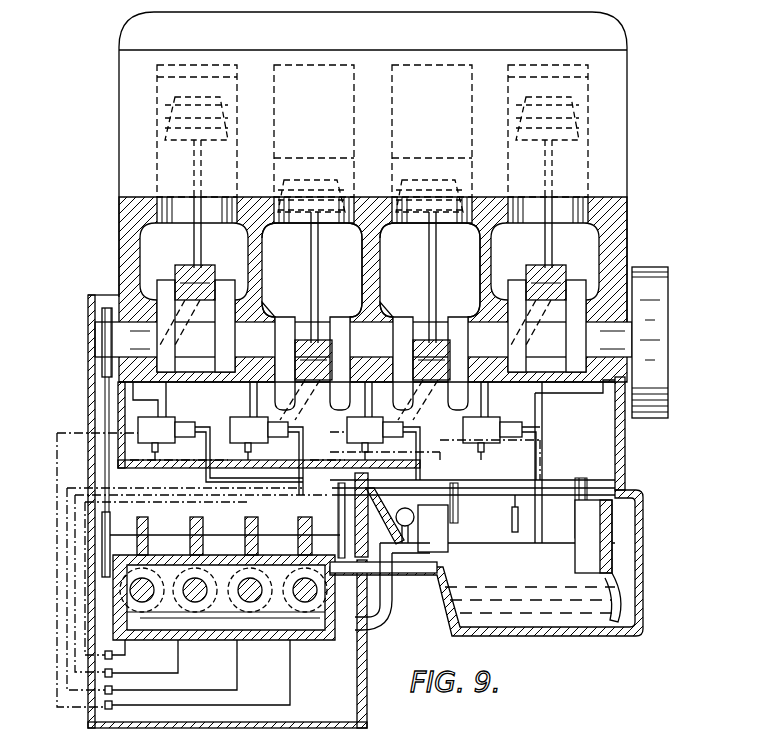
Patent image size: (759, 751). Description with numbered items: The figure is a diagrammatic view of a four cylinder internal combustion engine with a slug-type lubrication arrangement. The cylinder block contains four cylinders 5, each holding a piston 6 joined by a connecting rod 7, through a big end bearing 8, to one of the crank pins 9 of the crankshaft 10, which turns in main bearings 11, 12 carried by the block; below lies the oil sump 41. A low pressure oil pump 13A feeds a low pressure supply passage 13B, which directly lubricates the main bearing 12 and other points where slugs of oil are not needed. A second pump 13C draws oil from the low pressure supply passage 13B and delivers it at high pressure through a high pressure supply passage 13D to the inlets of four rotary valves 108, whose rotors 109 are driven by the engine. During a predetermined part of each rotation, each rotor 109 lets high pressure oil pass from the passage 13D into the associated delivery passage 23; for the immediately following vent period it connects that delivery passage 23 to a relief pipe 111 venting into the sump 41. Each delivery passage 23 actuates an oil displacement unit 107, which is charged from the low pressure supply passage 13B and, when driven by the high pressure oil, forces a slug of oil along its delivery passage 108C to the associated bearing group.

The cylinders 5 is at (274, 97).
The piston 6 is at (157, 97).
The connecting rod 7 is at (202, 248).
The big end bearing 8 is at (190, 278).
The crank pins 9 is at (220, 292).
The crankshaft 10 is at (512, 347).
The main bearing 11 is at (371, 270).
The main bearing 12 is at (601, 320).
The low pressure oil pump 13A is at (617, 528).
The low pressure supply passage 13B is at (484, 545).
The second pump 13C is at (440, 557).
The high pressure supply passage 13D is at (384, 626).
The delivery passage 23 is at (178, 673).
The oil sump 41 is at (574, 637).
The oil displacement unit 107 is at (339, 584).
The rotary valves 108 is at (145, 605).
The delivery passage 108C is at (164, 414).
The rotors 109 is at (148, 575).
The relief pipe 111 is at (402, 575).